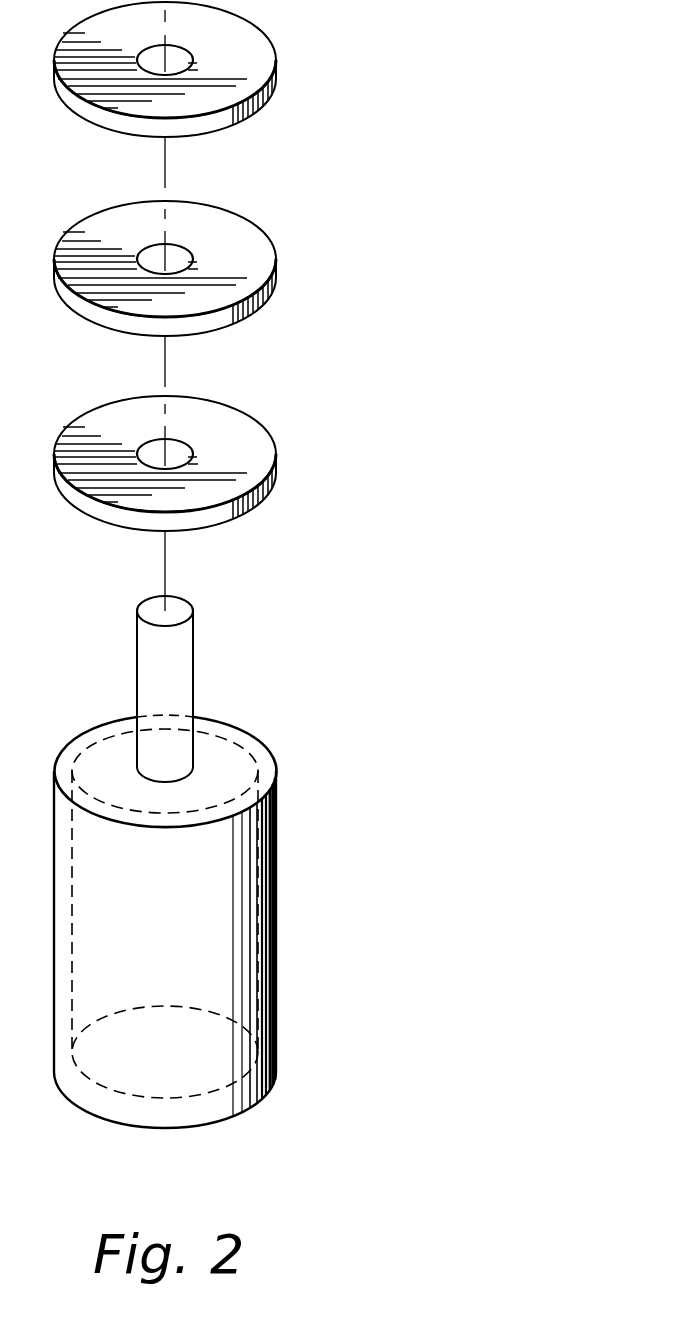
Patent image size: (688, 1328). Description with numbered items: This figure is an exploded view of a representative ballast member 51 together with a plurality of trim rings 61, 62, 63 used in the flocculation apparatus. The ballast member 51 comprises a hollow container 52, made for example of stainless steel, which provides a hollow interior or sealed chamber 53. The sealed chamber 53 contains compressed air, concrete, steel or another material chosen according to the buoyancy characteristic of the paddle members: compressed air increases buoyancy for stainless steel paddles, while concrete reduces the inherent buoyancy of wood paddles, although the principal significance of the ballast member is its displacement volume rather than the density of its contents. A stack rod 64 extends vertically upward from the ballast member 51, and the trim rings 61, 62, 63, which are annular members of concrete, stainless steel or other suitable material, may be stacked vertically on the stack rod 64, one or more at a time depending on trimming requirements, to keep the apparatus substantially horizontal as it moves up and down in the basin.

The ballast member 51 is at (277, 845).
The hollow container 52 is at (233, 913).
The sealed chamber 53 is at (177, 960).
The trim ring 61 is at (275, 461).
The trim ring 62 is at (275, 266).
The trim ring 63 is at (273, 68).
The stack rod 64 is at (194, 672).